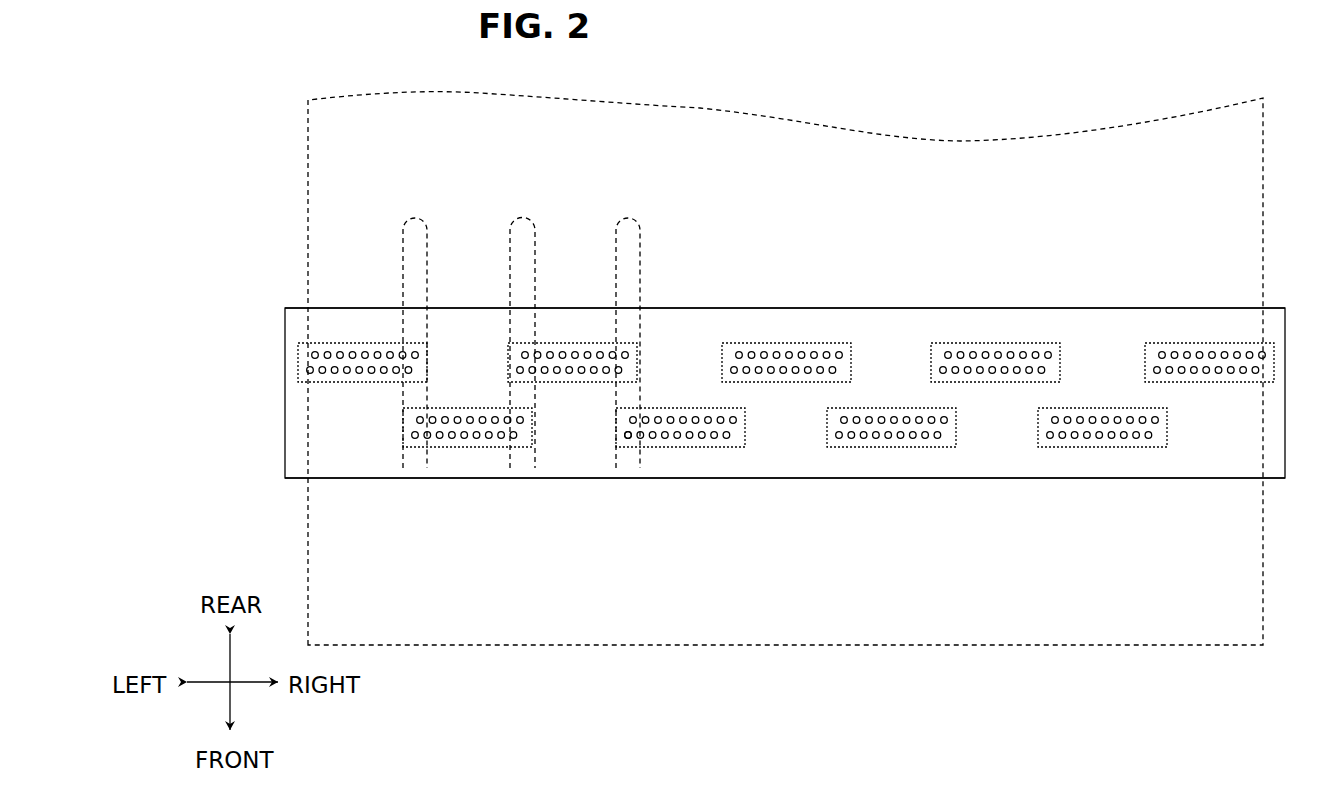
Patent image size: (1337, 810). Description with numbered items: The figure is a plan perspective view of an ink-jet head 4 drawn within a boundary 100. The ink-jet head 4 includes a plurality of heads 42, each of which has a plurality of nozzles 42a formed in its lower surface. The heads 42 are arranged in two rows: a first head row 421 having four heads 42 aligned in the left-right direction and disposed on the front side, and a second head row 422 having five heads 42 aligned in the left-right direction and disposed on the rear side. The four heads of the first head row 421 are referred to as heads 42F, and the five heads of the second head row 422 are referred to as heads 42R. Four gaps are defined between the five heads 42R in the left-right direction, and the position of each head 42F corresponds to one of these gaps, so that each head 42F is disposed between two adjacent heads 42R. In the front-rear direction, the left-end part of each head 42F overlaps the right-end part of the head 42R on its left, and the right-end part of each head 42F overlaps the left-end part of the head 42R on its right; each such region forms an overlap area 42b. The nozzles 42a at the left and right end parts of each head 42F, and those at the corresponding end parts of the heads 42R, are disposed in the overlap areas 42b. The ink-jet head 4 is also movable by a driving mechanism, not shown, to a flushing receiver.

The vehicle body / placement region 100 is at (1264, 136).
The ink-jet head 4 is at (1277, 293).
The first head row 421 is at (992, 498).
The second head row 422 is at (894, 271).
The head 42 is at (786, 390).
The head (rear) 42R is at (1205, 280).
The head (front) 42F is at (471, 450).
The nozzle 42a is at (627, 438).
The overlap area 42b is at (416, 218).